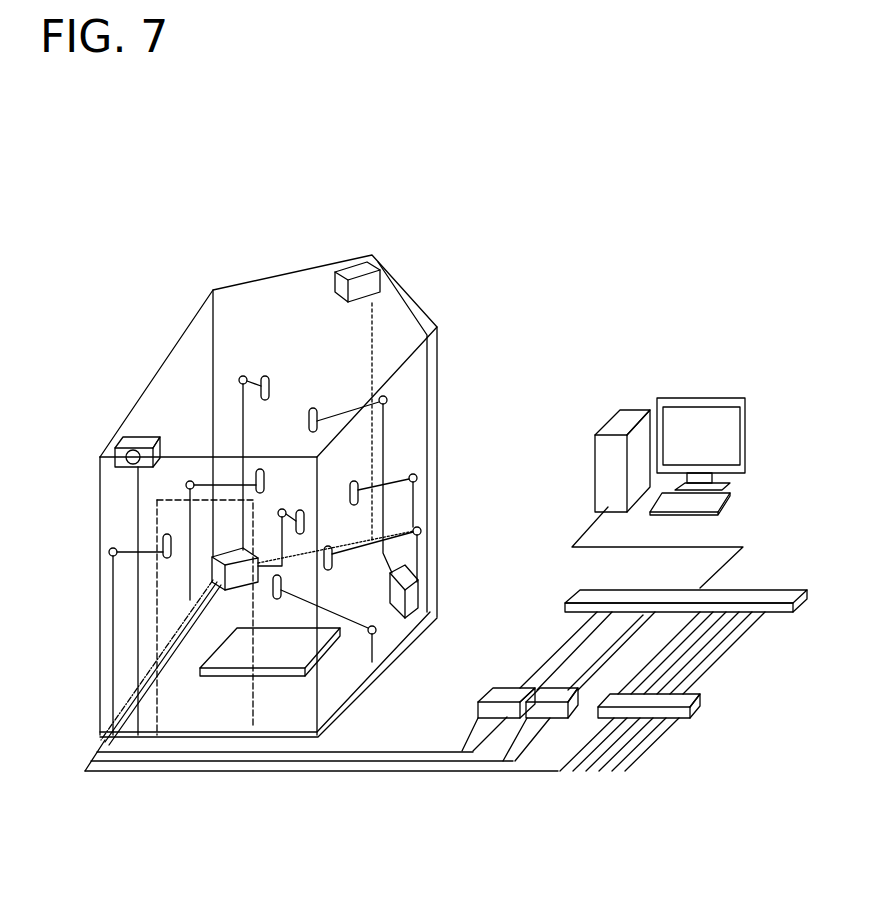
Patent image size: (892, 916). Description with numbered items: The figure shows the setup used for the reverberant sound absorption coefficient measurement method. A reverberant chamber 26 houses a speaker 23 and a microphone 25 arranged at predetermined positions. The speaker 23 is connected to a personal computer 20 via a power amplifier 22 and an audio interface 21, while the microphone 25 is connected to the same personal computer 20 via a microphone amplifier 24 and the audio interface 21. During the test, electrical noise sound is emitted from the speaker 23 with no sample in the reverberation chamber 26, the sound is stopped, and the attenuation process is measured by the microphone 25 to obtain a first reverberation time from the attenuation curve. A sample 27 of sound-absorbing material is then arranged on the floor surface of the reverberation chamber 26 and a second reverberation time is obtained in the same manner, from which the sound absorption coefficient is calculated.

The personal computer 20 is at (708, 394).
The audio interface 21 is at (781, 590).
The power amplifier 22 is at (480, 697).
The speaker 23 is at (140, 437).
The microphone amplifier 24 is at (692, 712).
The microphone 25 is at (267, 375).
The reverberant chamber 26 is at (322, 262).
The sample 27 is at (232, 676).